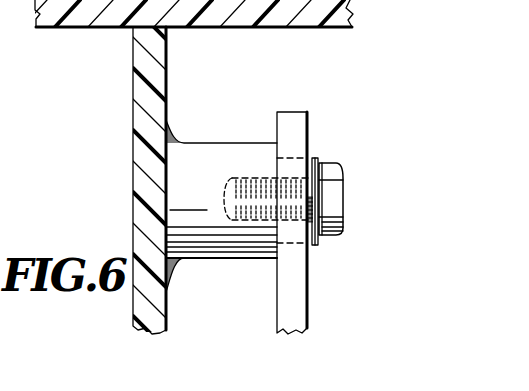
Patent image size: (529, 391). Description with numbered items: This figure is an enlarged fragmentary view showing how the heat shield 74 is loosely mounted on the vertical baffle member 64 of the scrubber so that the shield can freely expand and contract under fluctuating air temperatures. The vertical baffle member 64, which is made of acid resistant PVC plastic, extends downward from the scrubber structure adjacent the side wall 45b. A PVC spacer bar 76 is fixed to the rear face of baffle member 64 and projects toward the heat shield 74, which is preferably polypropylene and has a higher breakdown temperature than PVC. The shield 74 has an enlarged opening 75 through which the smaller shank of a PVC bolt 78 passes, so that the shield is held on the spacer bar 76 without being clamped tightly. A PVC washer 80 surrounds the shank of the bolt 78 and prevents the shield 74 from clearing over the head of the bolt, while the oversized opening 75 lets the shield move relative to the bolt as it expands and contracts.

The side wall 45b is at (258, 28).
The vertical baffle member 64 is at (133, 87).
The spacer bar 76 is at (207, 148).
The enlarged opening 75 is at (290, 157).
The washer 80 is at (317, 158).
The bolt 78 is at (343, 213).
The heat shield 74 is at (296, 223).